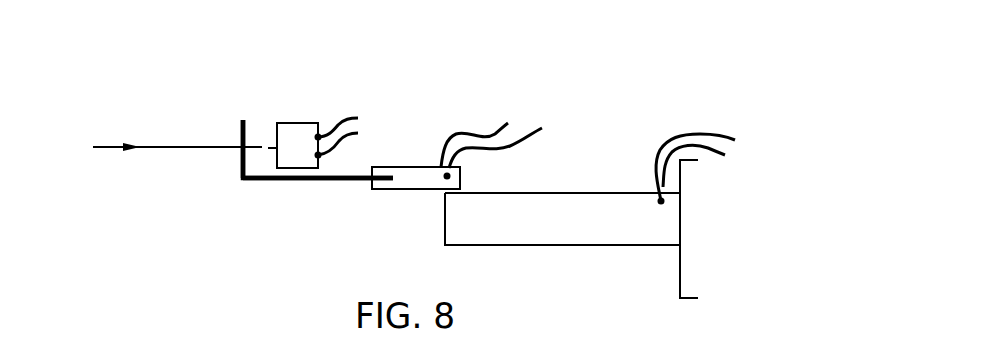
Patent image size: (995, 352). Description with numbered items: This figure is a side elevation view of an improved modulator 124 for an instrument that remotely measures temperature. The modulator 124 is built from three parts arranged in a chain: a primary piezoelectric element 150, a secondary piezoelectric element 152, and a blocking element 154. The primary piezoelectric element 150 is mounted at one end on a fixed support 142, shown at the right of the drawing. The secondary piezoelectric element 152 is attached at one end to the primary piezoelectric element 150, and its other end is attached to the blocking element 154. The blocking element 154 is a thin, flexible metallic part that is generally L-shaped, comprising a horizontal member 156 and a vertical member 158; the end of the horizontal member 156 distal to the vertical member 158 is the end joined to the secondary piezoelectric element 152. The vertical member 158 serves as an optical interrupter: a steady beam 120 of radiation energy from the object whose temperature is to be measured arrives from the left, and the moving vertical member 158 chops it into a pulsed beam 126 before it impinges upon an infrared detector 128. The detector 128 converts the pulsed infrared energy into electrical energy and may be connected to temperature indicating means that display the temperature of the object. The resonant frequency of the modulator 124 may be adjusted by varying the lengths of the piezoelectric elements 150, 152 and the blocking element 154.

The steady beam 120 is at (160, 147).
The modulator 124 is at (509, 95).
The pulsed beam 126 is at (258, 147).
The infrared detector 128 is at (298, 140).
The fixed support 142 is at (751, 245).
The primary piezoelectric element 150 is at (572, 232).
The secondary piezoelectric element 152 is at (417, 183).
The blocking element 154 is at (143, 185).
The horizontal member 156 is at (263, 180).
The vertical member 158 is at (240, 157).